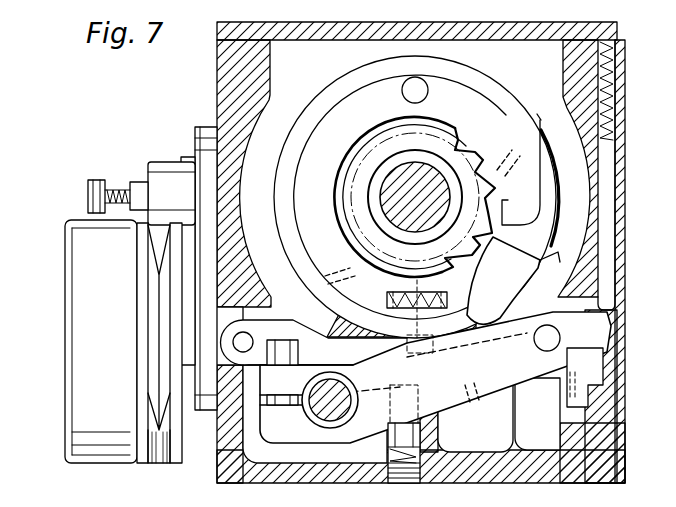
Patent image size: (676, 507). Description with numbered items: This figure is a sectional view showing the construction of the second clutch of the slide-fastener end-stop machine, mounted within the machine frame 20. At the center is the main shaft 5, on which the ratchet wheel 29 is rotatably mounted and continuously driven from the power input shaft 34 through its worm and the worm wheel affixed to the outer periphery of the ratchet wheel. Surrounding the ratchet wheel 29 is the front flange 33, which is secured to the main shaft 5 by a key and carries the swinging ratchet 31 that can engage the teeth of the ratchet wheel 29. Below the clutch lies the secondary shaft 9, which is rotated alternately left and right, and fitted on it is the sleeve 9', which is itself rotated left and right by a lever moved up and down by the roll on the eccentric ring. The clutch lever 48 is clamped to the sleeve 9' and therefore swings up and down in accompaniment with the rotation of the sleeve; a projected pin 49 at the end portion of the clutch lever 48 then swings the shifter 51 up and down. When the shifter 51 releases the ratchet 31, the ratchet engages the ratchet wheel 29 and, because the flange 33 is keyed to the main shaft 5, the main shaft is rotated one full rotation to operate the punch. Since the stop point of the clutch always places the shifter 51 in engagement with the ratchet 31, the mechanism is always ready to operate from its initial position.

The main shaft 5 is at (392, 182).
The secondary shaft 9 is at (319, 400).
The sleeve 9' is at (285, 416).
The machine frame 20 is at (221, 85).
The ratchet wheel 29 is at (467, 152).
The swinging ratchet 31 is at (486, 108).
The front flange 33 is at (545, 228).
The power input shaft 34 is at (186, 370).
The clutch lever 48 is at (450, 393).
The projected pin 49 is at (534, 340).
The shifter 51 is at (539, 375).